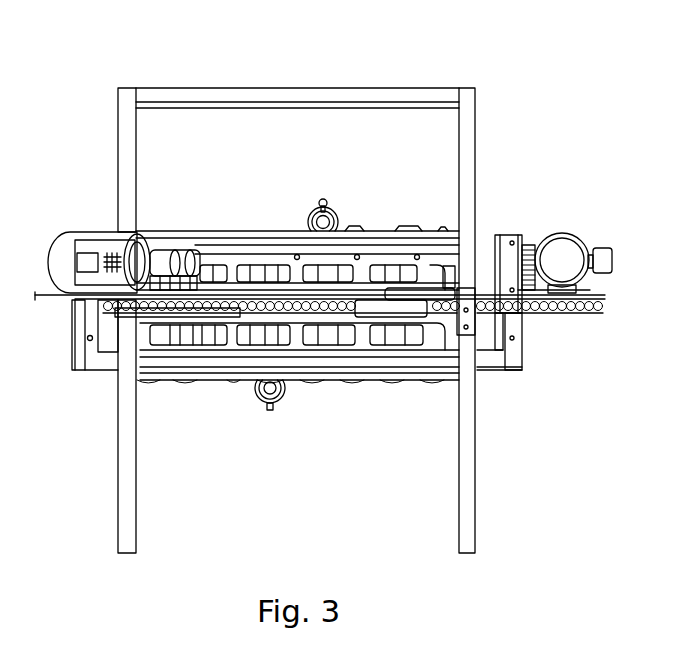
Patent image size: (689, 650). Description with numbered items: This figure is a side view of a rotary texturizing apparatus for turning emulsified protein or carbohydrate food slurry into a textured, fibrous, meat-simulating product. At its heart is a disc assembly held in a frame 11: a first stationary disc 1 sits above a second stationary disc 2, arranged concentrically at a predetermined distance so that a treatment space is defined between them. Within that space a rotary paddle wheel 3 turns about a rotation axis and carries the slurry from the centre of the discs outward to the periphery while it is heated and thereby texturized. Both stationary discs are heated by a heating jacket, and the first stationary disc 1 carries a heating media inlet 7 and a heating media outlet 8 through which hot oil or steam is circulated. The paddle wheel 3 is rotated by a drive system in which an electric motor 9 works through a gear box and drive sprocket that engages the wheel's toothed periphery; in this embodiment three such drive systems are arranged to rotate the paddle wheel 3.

The first stationary disc 1 is at (350, 272).
The second stationary disc 2 is at (305, 320).
The rotary paddle wheel 3 is at (332, 320).
The heating media inlet 7 is at (306, 215).
The heating media outlet 8 is at (255, 395).
The electric motor 9 is at (561, 231).
The frame 11 is at (477, 390).